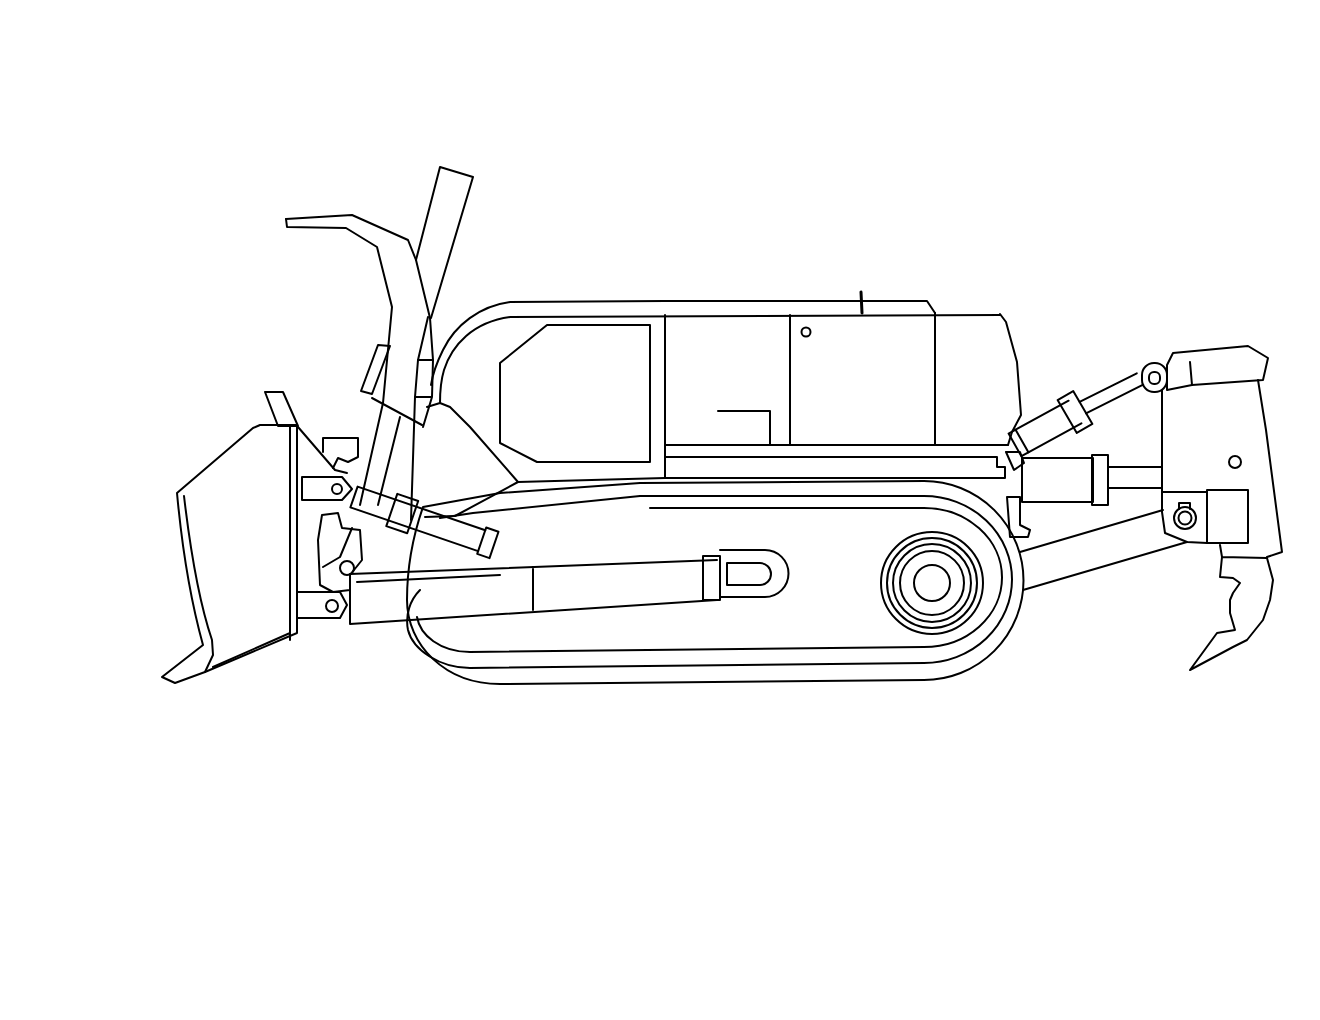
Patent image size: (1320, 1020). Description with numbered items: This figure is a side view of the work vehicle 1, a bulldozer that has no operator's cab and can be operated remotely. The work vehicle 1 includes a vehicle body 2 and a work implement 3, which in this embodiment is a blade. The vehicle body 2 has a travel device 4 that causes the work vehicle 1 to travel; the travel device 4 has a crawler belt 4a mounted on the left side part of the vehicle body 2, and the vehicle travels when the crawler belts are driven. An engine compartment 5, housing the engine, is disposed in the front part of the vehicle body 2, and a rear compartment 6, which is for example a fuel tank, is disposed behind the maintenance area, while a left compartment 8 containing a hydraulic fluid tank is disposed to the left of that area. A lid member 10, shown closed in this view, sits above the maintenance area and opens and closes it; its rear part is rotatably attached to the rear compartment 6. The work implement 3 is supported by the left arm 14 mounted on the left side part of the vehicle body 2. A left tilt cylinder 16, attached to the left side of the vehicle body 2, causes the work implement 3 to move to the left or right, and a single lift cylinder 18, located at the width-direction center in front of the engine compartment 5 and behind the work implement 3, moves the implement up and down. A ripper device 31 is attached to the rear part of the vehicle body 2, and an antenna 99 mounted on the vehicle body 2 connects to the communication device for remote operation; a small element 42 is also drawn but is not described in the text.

The work vehicle 1 is at (325, 135).
The vehicle body 2 is at (714, 286).
The work implement 3 is at (190, 454).
The travel device 4 is at (813, 697).
The crawler belt 4a is at (723, 657).
The engine compartment 5 is at (607, 300).
The rear compartment 6 is at (982, 328).
The left compartment 8 is at (892, 300).
The lid member 10 is at (850, 296).
The left arm 14 is at (578, 593).
The left tilt cylinder 16 is at (440, 532).
The lift cylinder 18 is at (462, 167).
The ripper device 31 is at (1125, 366).
The lamp 42 is at (810, 327).
The antenna 99 is at (863, 300).